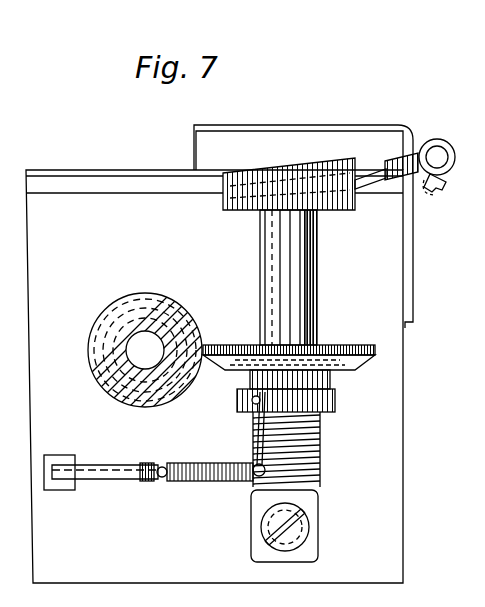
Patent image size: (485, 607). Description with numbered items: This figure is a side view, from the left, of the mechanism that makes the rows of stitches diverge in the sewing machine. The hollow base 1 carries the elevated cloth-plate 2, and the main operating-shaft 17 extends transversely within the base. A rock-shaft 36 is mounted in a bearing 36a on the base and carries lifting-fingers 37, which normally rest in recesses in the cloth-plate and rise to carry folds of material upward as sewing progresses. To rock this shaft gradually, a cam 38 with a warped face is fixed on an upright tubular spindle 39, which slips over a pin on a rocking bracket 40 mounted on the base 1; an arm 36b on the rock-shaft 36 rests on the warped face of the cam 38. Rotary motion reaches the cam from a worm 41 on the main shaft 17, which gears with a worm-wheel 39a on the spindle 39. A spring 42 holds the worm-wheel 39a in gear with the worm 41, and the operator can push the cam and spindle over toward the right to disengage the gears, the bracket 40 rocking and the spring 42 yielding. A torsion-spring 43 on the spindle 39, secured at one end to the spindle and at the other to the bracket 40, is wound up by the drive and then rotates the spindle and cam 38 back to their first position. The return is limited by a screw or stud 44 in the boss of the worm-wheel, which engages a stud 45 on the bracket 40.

The base 1 is at (214, 376).
The cloth-plate 2 is at (234, 125).
The main operating-shaft 17 is at (126, 350).
The rock-shaft 36 is at (440, 149).
The bearing 36a is at (414, 258).
The arm 36b is at (370, 170).
The lifting-fingers 37 is at (419, 132).
The cam 38 is at (262, 172).
The tubular spindle 39 is at (315, 288).
The worm-wheel 39a is at (234, 343).
The rocking bracket 40 is at (252, 536).
The worm 41 is at (146, 292).
The spring 42 is at (183, 462).
The torsion-spring 43 is at (322, 462).
The screw or stud 44 is at (244, 402).
The stud 45 is at (256, 441).